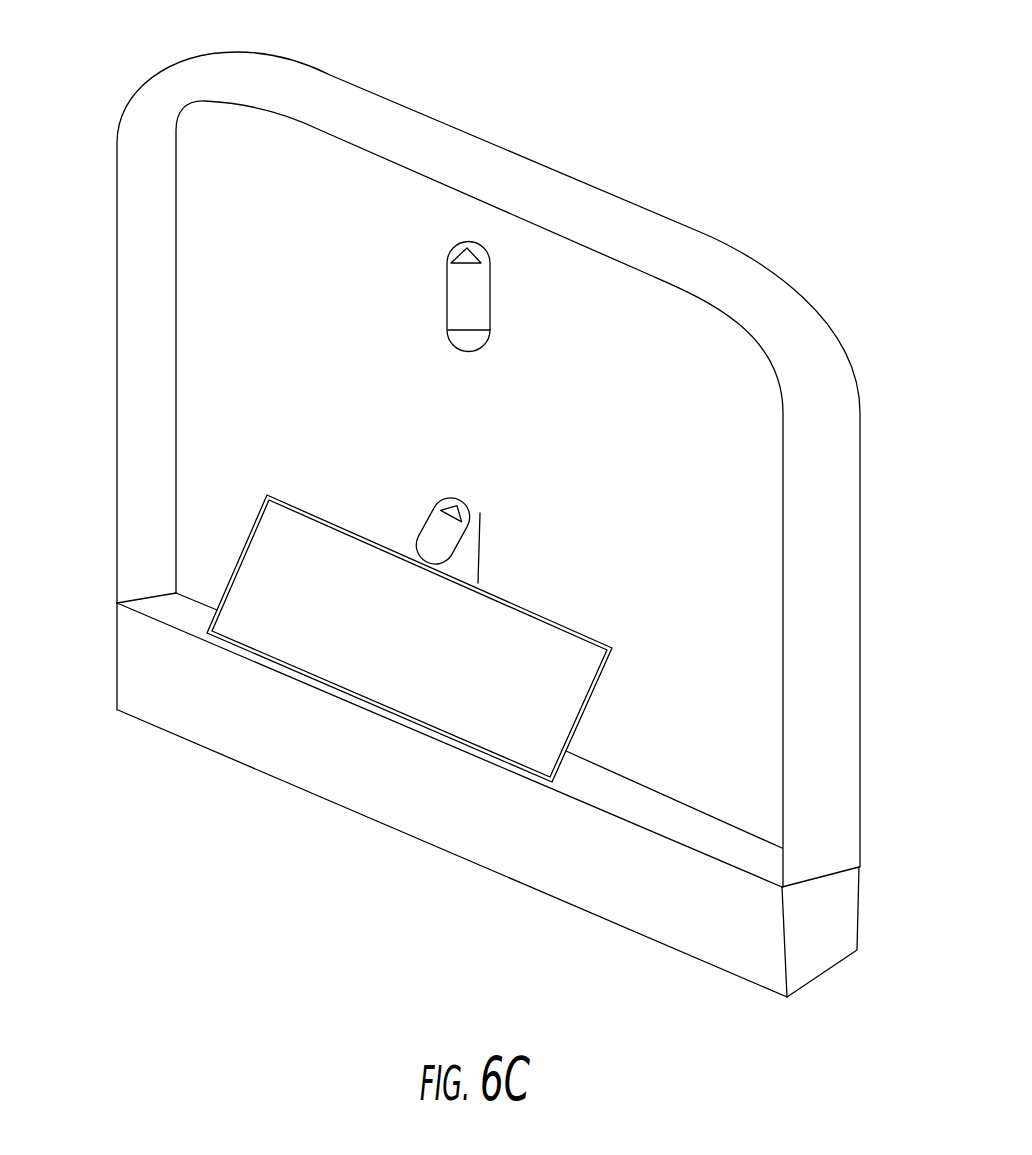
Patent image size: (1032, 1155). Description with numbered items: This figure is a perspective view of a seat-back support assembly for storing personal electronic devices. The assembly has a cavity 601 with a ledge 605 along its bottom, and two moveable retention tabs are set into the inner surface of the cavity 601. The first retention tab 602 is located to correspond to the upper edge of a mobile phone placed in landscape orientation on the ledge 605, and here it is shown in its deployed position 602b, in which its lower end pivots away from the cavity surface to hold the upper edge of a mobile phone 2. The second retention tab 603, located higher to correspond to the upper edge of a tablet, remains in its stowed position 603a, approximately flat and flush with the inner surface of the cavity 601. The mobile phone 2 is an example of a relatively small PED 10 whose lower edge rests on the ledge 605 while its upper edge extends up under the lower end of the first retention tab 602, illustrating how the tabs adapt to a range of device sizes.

The cavity 601 is at (238, 160).
The first retention tab 602 is at (467, 533).
The deployed position 602b is at (432, 532).
The second retention tab 603 is at (483, 285).
The stowed position 603a is at (465, 310).
The ledge 605 is at (335, 755).
The PED 10 is at (280, 540).
The mobile phone 2 is at (255, 597).